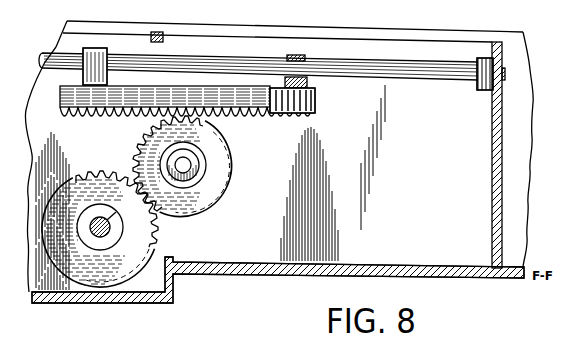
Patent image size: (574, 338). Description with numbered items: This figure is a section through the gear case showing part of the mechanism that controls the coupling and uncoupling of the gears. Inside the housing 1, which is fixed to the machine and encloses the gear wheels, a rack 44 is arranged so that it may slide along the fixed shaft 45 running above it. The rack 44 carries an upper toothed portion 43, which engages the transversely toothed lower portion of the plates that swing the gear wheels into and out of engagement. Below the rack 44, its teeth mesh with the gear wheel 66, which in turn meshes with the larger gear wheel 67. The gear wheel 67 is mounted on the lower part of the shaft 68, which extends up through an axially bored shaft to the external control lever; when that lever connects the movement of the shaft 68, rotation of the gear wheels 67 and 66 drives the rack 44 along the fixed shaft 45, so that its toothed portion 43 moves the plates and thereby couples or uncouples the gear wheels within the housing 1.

The housing 1 is at (212, 271).
The upper toothed portion 43 is at (308, 107).
The rack 44 is at (261, 119).
The fixed shaft 45 is at (380, 78).
The gear wheel 66 is at (221, 184).
The gear wheel 67 is at (116, 229).
The shaft 68 is at (116, 212).